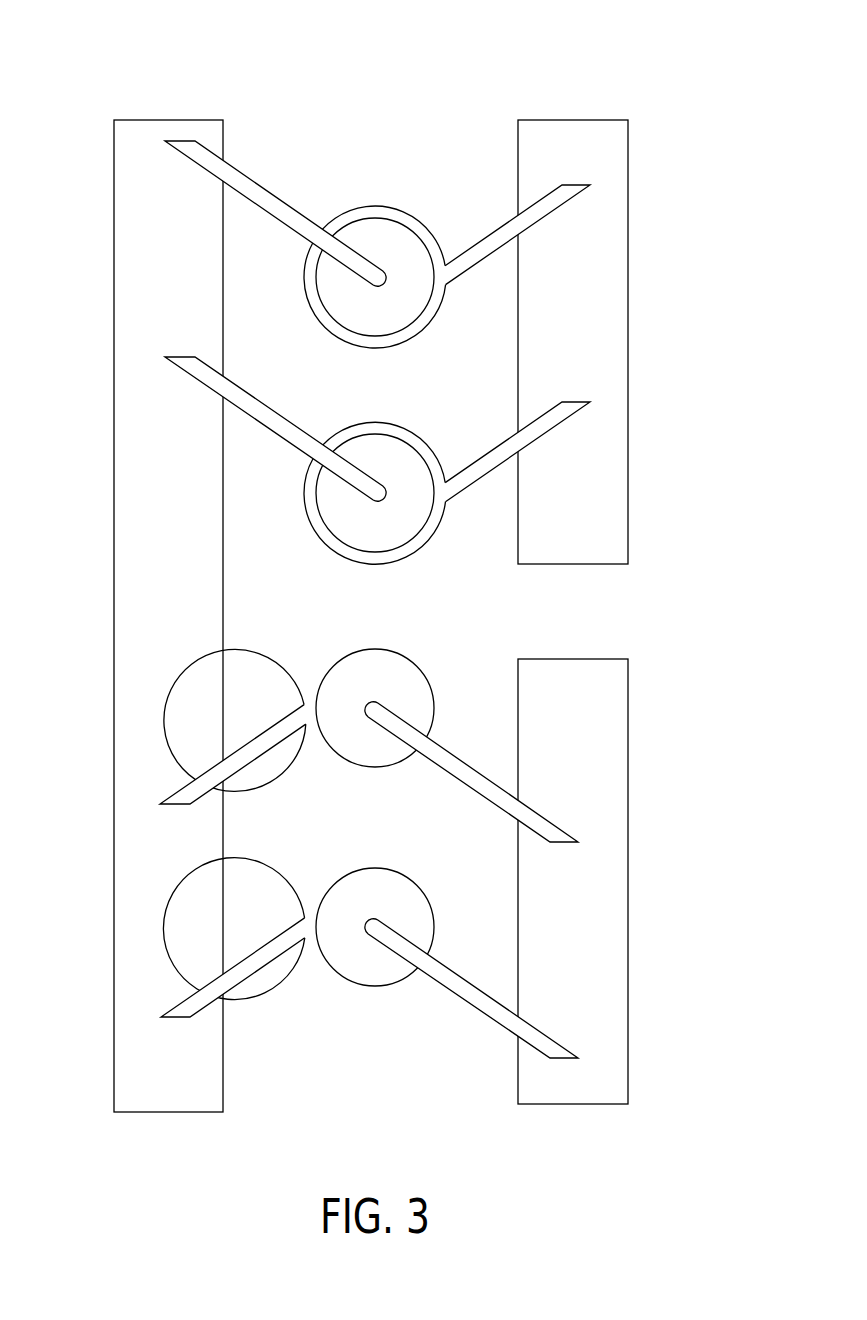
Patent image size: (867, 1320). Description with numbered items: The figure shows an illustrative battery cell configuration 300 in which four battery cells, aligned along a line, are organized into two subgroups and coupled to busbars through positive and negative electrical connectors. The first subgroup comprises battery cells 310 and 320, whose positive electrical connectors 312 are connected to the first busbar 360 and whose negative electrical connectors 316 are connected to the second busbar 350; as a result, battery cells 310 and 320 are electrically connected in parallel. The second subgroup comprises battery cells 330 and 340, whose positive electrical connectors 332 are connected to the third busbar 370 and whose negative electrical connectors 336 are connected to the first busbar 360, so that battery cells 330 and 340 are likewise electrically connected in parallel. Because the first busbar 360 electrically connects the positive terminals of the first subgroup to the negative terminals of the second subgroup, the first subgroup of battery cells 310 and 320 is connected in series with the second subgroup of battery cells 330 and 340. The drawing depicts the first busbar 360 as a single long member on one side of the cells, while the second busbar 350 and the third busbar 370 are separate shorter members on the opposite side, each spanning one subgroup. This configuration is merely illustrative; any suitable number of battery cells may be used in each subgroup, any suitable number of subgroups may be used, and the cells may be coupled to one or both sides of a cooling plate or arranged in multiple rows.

The battery cell configuration 300 is at (158, 30).
The battery cell 310 is at (361, 191).
The positive electrical connector 312 is at (272, 197).
The negative electrical connector 316 is at (481, 252).
The battery cell 320 is at (350, 567).
The battery cell 330 is at (352, 636).
The positive electrical connector 332 is at (490, 787).
The negative electrical connector 336 is at (276, 730).
The battery cell 340 is at (367, 1013).
The second busbar 350 is at (602, 264).
The first busbar 360 is at (135, 527).
The third busbar 370 is at (602, 899).